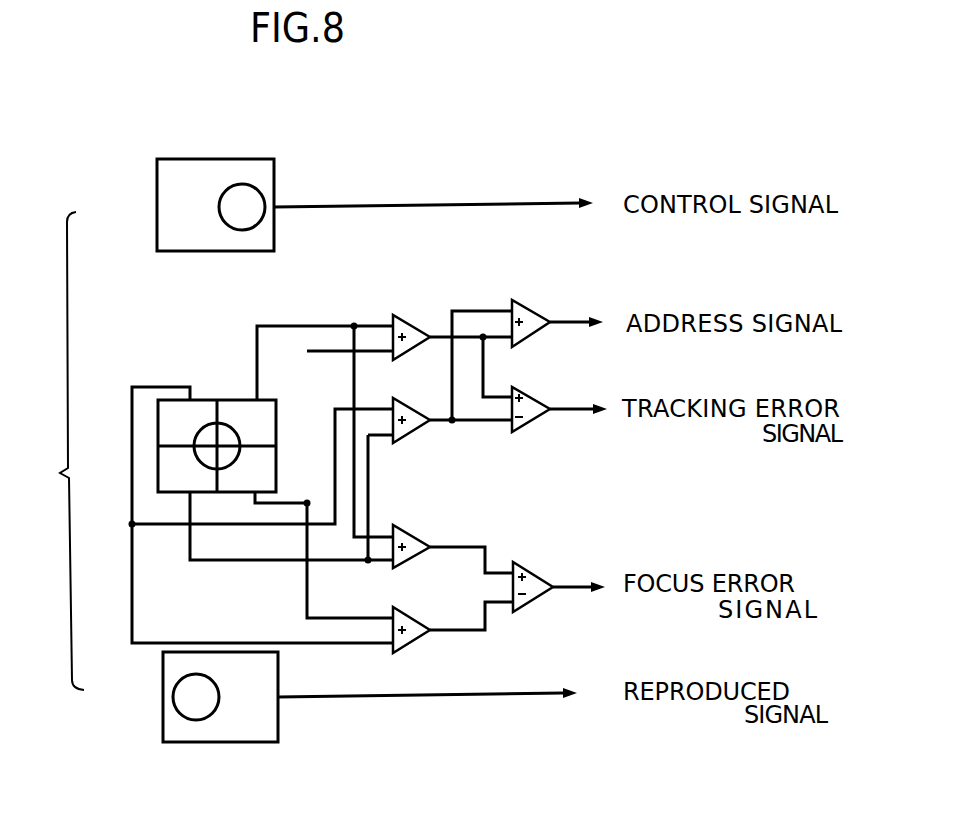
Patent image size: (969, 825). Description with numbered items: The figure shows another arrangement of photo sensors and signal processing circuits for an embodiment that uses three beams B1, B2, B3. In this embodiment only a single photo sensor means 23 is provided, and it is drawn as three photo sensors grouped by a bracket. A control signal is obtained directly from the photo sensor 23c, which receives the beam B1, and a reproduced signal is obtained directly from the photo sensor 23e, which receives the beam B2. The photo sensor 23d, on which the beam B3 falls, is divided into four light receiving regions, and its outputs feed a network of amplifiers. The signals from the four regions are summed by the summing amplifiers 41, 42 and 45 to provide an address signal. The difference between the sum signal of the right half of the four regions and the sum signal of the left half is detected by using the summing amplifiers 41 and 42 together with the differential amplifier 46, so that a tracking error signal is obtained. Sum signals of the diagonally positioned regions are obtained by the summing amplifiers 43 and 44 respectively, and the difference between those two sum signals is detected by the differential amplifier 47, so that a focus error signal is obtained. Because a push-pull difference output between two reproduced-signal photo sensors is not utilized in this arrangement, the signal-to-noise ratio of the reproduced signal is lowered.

The photo sensor means 23 is at (58, 451).
The photo sensor 23c is at (158, 226).
The photo sensor 23d is at (164, 425).
The photo sensor 23e is at (164, 669).
The beam B1 is at (257, 198).
The beam B2 is at (188, 712).
The beam B3 is at (227, 432).
The summing amplifier 41 is at (421, 317).
The summing amplifier 42 is at (413, 398).
The summing amplifier 43 is at (398, 527).
The summing amplifier 44 is at (402, 609).
The summing amplifier 45 is at (550, 314).
The differential amplifier 46 is at (550, 392).
The differential amplifier 47 is at (545, 573).